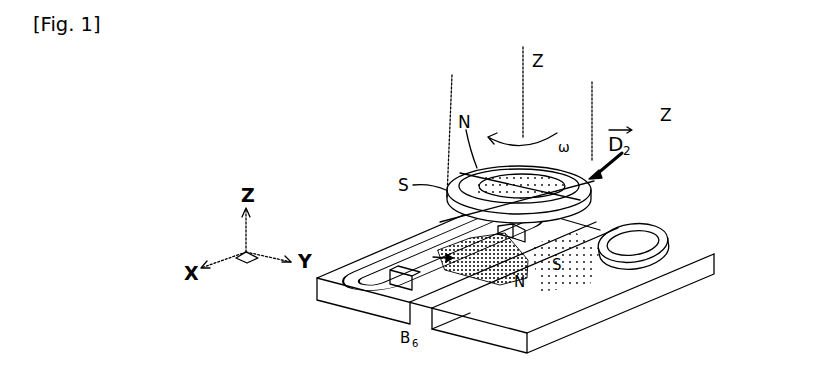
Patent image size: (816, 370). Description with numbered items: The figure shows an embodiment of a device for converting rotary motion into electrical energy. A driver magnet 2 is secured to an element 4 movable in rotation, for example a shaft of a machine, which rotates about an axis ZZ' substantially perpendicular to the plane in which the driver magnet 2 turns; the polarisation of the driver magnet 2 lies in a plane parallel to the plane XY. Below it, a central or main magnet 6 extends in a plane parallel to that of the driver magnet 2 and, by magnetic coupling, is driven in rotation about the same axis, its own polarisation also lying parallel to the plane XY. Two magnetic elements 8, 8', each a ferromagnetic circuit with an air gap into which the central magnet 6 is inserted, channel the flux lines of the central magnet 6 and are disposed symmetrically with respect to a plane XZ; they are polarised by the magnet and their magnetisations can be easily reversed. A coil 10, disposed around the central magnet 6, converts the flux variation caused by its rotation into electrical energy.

The driver magnet 2 is at (600, 176).
The element movable in rotation 4 is at (545, 122).
The central magnet 6 is at (410, 254).
The magnetic element 8 is at (664, 244).
The magnetic element 8' is at (443, 241).
The coil 10 is at (615, 271).